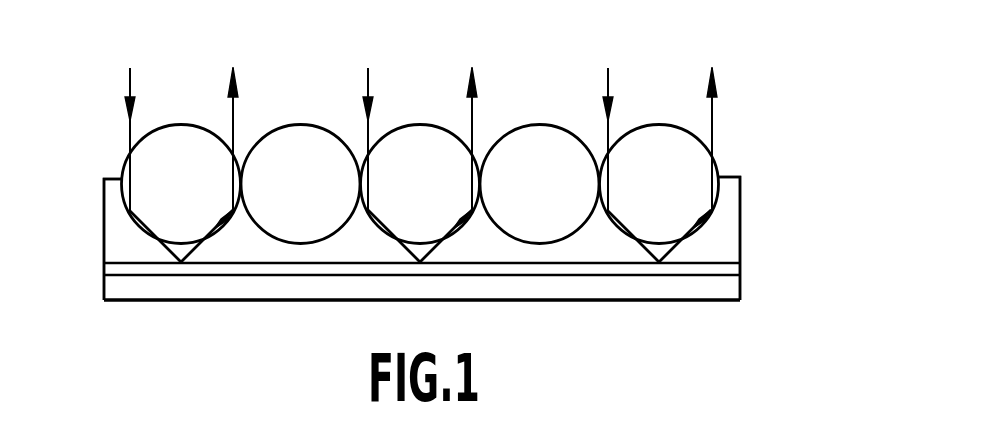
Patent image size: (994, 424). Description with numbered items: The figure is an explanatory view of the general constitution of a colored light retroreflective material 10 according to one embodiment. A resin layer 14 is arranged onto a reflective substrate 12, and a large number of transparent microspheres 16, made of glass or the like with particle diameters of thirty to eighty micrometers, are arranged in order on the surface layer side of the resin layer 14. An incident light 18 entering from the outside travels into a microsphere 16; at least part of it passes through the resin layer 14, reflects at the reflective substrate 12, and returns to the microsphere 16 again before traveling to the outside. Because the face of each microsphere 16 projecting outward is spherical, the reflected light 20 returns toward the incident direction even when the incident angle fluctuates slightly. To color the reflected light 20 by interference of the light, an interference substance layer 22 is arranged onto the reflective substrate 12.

The retroreflective material 10 is at (770, 84).
The reflective substrate 12 is at (741, 287).
The resin layer 14 is at (739, 236).
The transparent microsphere 16 is at (181, 124).
The incident light 18 is at (129, 95).
The reflected light 20 is at (233, 113).
The interference substance layer 22 is at (132, 262).